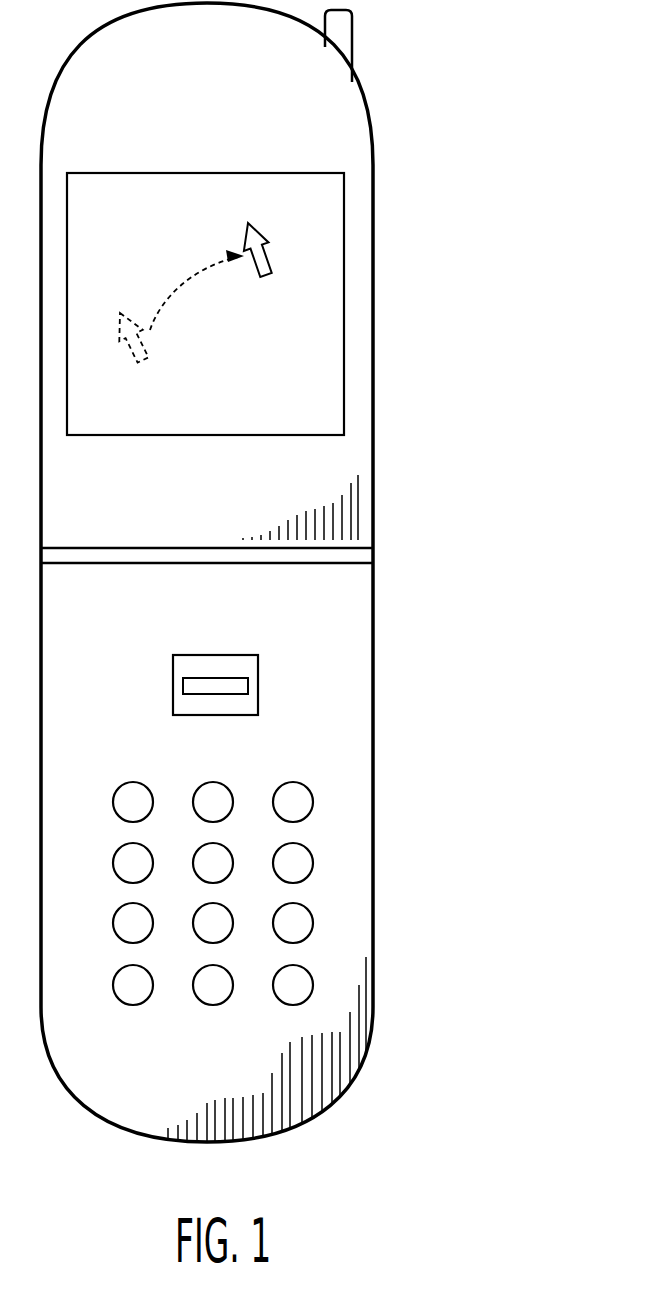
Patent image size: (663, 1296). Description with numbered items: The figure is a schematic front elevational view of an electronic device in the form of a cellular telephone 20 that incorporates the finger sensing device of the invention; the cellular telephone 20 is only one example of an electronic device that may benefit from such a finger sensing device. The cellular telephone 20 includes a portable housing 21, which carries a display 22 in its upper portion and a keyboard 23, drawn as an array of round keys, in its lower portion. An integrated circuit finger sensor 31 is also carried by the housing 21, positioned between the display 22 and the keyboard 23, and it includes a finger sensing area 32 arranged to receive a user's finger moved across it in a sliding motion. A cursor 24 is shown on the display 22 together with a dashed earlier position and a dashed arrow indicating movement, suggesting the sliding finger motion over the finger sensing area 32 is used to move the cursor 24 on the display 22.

The cellular telephone 20 is at (446, 151).
The portable housing 21 is at (373, 430).
The display 22 is at (344, 320).
The keyboard 23 is at (218, 861).
The cursor 24 is at (262, 250).
The integrated circuit finger sensor 31 is at (258, 657).
The finger sensing area 32 is at (248, 686).